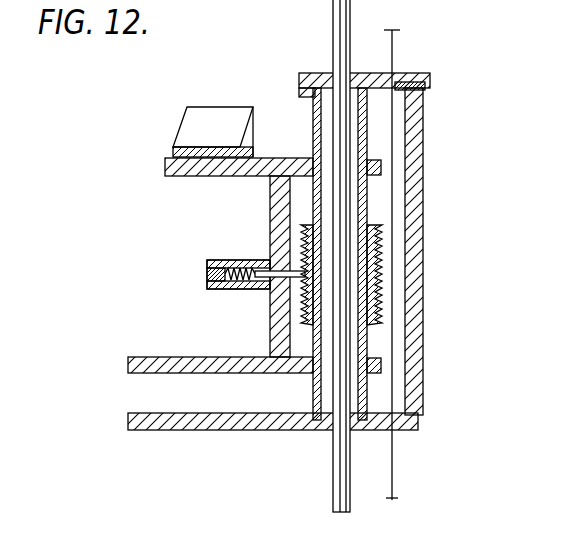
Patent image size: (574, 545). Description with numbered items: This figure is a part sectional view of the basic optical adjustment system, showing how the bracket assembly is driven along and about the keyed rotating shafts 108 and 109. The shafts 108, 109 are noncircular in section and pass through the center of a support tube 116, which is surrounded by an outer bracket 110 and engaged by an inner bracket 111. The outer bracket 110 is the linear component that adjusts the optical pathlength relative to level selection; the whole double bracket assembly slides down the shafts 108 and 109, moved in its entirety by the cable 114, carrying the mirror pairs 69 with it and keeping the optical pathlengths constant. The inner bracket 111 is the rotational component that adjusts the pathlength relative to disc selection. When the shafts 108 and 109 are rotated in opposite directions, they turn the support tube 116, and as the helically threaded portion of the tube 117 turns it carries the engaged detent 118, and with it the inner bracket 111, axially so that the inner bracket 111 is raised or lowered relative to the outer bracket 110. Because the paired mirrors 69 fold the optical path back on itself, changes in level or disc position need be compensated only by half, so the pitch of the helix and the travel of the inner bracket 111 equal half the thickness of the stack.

The paired mirrors 69 is at (187, 121).
The shaft 108 is at (334, 33).
The shaft 109 is at (315, 256).
The outer bracket 110 is at (425, 172).
The inner bracket 111 is at (271, 228).
The cable 114 is at (400, 31).
The support tube 116 is at (313, 137).
The helically threaded portion of the tube 117 is at (384, 272).
The detent 118 is at (268, 291).